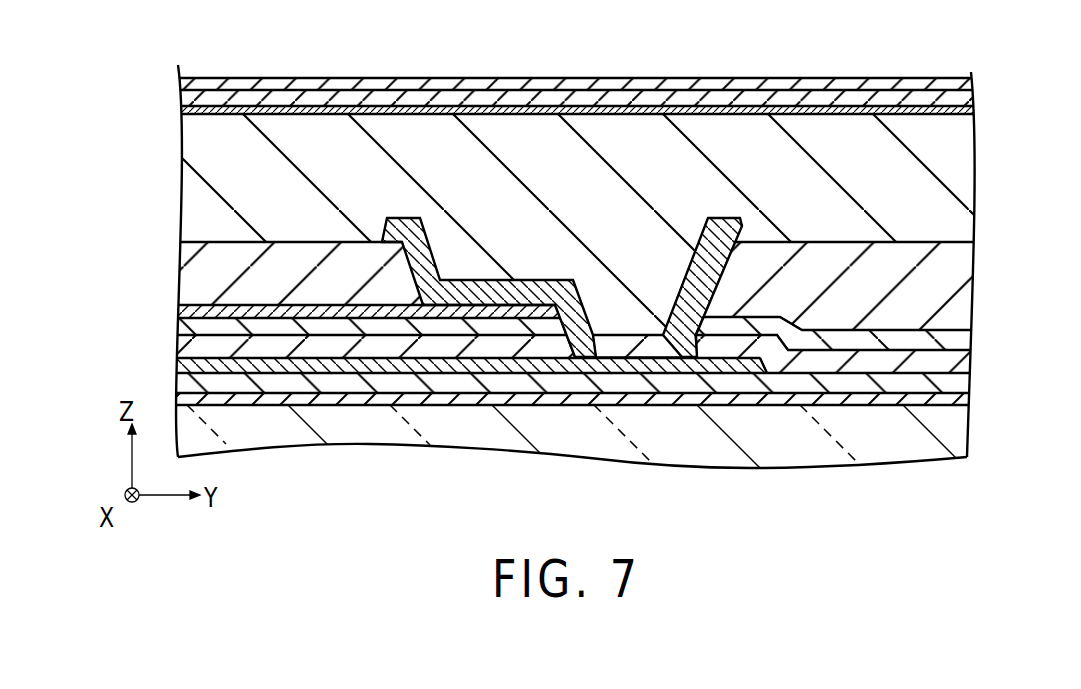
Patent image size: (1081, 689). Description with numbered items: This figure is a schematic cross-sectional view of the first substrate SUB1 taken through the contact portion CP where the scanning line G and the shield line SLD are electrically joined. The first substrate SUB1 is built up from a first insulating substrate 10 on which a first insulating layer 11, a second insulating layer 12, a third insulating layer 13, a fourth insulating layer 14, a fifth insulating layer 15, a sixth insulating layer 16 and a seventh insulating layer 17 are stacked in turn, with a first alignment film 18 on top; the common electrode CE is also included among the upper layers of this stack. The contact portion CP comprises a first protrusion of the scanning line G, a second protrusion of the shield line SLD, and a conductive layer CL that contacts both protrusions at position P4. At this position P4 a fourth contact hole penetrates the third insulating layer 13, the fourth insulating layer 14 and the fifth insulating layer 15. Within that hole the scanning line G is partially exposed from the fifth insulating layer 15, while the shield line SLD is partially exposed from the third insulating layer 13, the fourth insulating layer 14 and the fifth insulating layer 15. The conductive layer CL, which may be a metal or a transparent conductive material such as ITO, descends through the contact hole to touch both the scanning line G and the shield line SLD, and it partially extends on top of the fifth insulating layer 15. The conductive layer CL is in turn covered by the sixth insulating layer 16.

The first substrate SUB1 is at (139, 91).
The first insulating substrate 10 is at (953, 440).
The first insulating layer 11 is at (946, 397).
The second insulating layer 12 is at (946, 382).
The third insulating layer 13 is at (946, 355).
The fourth insulating layer 14 is at (946, 333).
The fifth insulating layer 15 is at (946, 274).
The sixth insulating layer 16 is at (953, 173).
The seventh insulating layer 17 is at (957, 100).
The first alignment film 18 is at (935, 88).
The common electrode CE is at (433, 113).
The contact portion CP is at (510, 197).
The conductive layer CL is at (533, 283).
The scanning line G is at (268, 312).
The shield line SLD is at (470, 368).
The position P4 is at (626, 237).